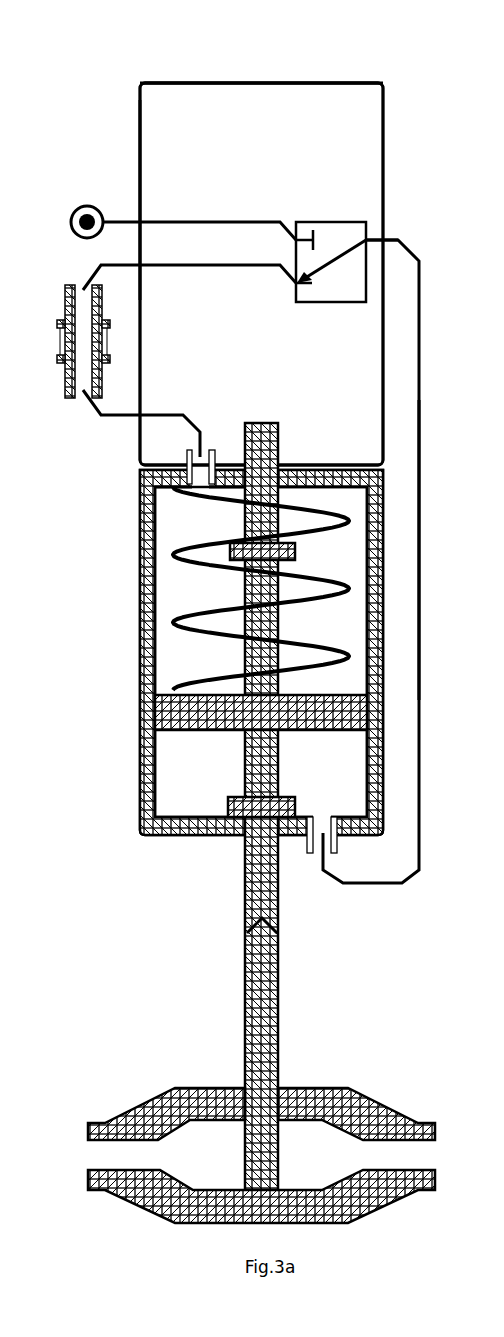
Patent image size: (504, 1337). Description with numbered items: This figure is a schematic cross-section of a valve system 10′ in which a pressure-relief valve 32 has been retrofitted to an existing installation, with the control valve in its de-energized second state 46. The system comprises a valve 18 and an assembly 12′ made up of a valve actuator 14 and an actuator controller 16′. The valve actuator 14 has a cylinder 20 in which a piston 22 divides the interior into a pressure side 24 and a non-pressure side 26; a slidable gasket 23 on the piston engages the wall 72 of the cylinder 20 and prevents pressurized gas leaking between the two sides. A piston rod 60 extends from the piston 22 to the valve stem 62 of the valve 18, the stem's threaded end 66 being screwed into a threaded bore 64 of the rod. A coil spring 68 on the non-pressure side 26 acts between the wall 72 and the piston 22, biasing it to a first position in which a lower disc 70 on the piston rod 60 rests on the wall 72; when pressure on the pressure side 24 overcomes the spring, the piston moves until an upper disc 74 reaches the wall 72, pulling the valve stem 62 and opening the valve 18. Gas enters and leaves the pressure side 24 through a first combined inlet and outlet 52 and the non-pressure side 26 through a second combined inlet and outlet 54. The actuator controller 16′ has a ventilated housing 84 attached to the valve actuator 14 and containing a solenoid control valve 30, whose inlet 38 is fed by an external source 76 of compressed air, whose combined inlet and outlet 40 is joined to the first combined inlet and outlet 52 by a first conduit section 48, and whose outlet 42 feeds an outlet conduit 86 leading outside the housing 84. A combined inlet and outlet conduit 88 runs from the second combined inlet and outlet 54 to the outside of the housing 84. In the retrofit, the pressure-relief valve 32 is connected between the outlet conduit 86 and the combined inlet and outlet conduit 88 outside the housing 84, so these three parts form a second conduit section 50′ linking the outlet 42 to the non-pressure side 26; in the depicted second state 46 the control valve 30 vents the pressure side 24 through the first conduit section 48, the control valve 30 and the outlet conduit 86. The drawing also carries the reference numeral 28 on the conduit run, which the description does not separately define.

The valve system 10′ is at (432, 104).
The assembly 12′ is at (136, 97).
The valve actuator 14 is at (136, 808).
The actuator controller 16′ is at (136, 128).
The valve 18 is at (138, 1103).
The cylinder 20 is at (138, 782).
The piston 22 is at (156, 717).
The slidable gasket 23 is at (175, 713).
The pressure side 24 is at (180, 750).
The non-pressure side 26 is at (178, 665).
The conduit 28 is at (423, 475).
The control valve 30 is at (338, 214).
The pressure-relief valve 32 is at (58, 310).
The inlet 38 is at (328, 263).
The combined inlet and outlet 40 is at (368, 226).
The outlet 42 is at (310, 299).
The second state 46 is at (318, 222).
The first conduit section 48 is at (421, 356).
The second conduit section 50′ is at (216, 270).
The first combined inlet and outlet 52 is at (340, 833).
The second combined inlet and outlet 54 is at (200, 476).
The piston rod 60 is at (245, 873).
The valve stem 62 is at (245, 973).
The threaded bore 64 is at (245, 908).
The threaded end 66 is at (245, 953).
The coil spring 68 is at (188, 612).
The lower disc 70 is at (300, 810).
The wall 72 is at (170, 543).
The upper disc 74 is at (295, 555).
The external source of compressed air 76 is at (94, 206).
The housing 84 is at (138, 153).
The outlet conduit 86 is at (92, 275).
The combined inlet and outlet conduit 88 is at (90, 410).